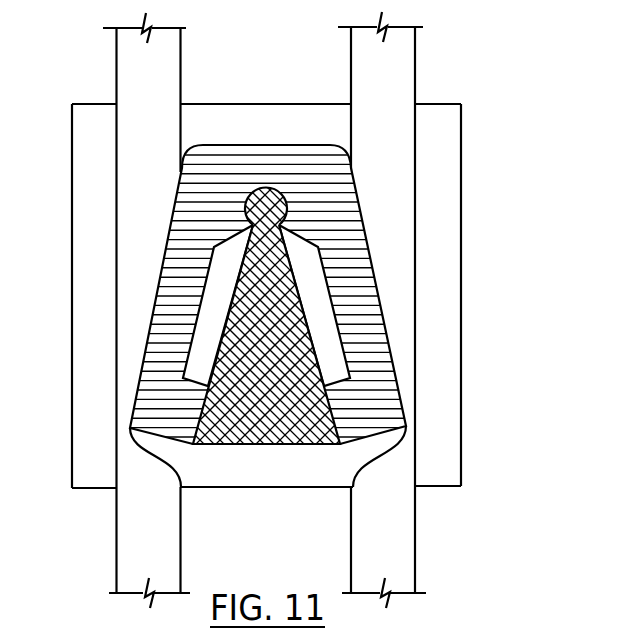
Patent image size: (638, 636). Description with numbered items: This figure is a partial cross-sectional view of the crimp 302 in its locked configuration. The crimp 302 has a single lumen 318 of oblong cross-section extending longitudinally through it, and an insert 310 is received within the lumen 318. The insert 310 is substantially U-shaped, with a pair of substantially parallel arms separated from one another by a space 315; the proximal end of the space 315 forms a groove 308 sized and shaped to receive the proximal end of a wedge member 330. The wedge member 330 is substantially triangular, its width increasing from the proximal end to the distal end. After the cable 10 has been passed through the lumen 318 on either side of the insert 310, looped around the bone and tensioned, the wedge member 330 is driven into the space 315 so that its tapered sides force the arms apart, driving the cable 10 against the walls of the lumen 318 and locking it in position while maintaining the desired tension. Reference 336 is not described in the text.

The cable 10 is at (128, 70).
The crimp 302 is at (72, 245).
The groove 308 is at (265, 187).
The insert 310 is at (201, 166).
The space 315 is at (325, 333).
The lumen 318 is at (240, 469).
The wedge member 330 is at (283, 433).
The bulb opening 336 is at (279, 208).